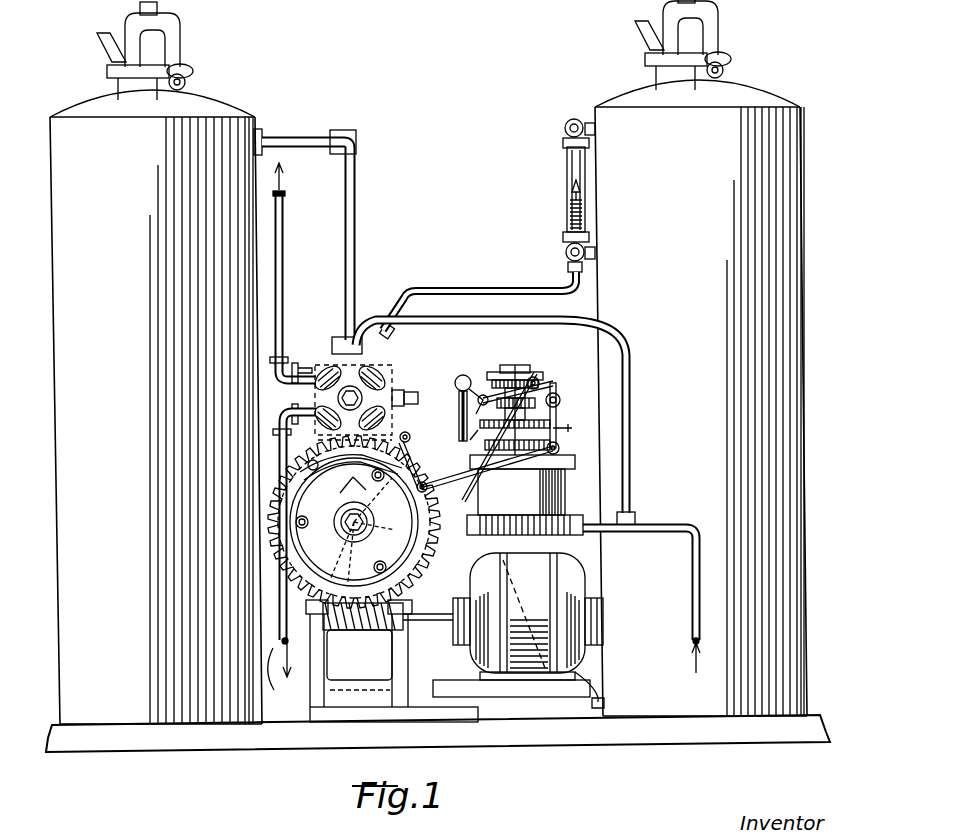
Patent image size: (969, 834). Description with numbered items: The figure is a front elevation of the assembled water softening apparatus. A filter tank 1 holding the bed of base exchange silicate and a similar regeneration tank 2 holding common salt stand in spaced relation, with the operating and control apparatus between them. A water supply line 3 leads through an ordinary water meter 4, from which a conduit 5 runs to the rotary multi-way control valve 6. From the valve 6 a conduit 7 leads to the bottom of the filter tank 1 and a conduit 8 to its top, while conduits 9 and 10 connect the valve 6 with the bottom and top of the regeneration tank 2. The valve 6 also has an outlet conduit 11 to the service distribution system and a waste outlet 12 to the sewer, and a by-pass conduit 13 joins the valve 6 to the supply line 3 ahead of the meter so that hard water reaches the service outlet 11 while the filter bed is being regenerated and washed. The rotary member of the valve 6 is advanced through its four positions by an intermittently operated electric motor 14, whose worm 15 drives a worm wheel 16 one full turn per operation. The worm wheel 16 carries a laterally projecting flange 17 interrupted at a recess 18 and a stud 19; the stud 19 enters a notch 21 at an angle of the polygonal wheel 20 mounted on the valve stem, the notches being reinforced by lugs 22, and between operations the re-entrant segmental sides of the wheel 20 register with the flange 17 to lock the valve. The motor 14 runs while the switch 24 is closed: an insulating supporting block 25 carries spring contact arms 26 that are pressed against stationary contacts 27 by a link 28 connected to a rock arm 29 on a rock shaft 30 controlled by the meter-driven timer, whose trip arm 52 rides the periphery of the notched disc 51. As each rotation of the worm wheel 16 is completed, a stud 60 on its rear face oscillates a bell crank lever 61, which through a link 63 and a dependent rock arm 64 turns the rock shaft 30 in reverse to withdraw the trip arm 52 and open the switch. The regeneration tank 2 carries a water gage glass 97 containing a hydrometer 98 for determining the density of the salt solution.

The filter tank 1 is at (156, 363).
The regeneration tank 2 is at (701, 358).
The water supply line 3 is at (690, 573).
The water meter 4 is at (525, 495).
The conduit 5 is at (420, 466).
The rotary multi-way control valve 6 is at (396, 372).
The conduit 7 is at (356, 657).
The conduit 8 is at (354, 257).
The conduit 9 is at (447, 407).
The conduit 10 is at (497, 292).
The outlet conduit 11 is at (285, 271).
The waste outlet 12 is at (278, 566).
The by-pass conduit 13 is at (481, 322).
The electric motor 14 is at (518, 630).
The worm 15 is at (400, 602).
The worm wheel 16 is at (335, 525).
The flange 17 is at (410, 532).
The interruption 18 is at (349, 491).
The stud 19 is at (291, 463).
The polygonal wheel 20 is at (332, 345).
The notch 21 is at (291, 390).
The lugs 22 is at (284, 424).
The switch 24 is at (459, 396).
The supporting block 25 is at (484, 394).
The spring contact arms 26 is at (496, 392).
The stationary contacts 27 is at (478, 436).
The link 28 is at (536, 377).
The rock arm 29 is at (558, 389).
The rock shaft 30 is at (561, 401).
The disc 51 is at (540, 368).
The trip arm 52 is at (547, 376).
The stud 60 is at (364, 470).
The bell crank lever 61 is at (372, 445).
The link 63 is at (560, 448).
The rock arm 64 is at (572, 430).
The water gage glass 97 is at (566, 185).
The hydrometer 98 is at (570, 205).